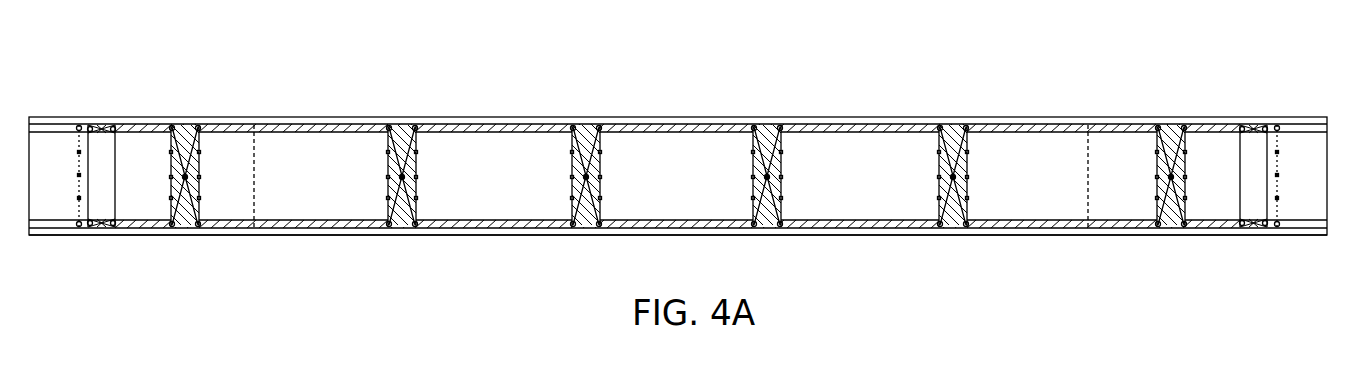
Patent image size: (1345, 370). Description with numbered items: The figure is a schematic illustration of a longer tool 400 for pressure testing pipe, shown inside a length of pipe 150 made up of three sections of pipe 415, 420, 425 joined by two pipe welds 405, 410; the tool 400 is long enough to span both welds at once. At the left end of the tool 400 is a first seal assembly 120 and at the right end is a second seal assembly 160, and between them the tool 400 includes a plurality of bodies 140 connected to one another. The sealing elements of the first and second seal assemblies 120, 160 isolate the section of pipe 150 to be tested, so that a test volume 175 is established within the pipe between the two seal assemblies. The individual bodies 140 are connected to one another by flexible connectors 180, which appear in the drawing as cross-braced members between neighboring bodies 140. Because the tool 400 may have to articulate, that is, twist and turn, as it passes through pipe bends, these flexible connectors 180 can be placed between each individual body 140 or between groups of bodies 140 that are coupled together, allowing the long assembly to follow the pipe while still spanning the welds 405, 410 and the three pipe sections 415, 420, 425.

The longer tool 400 is at (1163, 54).
The first seal assembly 120 is at (100, 126).
The second seal assembly 160 is at (1262, 232).
The body 140 is at (330, 191).
The pipe 150 is at (50, 236).
The test volume 175 is at (846, 130).
The flexible connector 180 is at (185, 177).
The pipe weld 405 is at (256, 212).
The pipe weld 410 is at (1087, 207).
The section of pipe 415 is at (213, 110).
The section of pipe 420 is at (690, 110).
The section of pipe 425 is at (1130, 110).